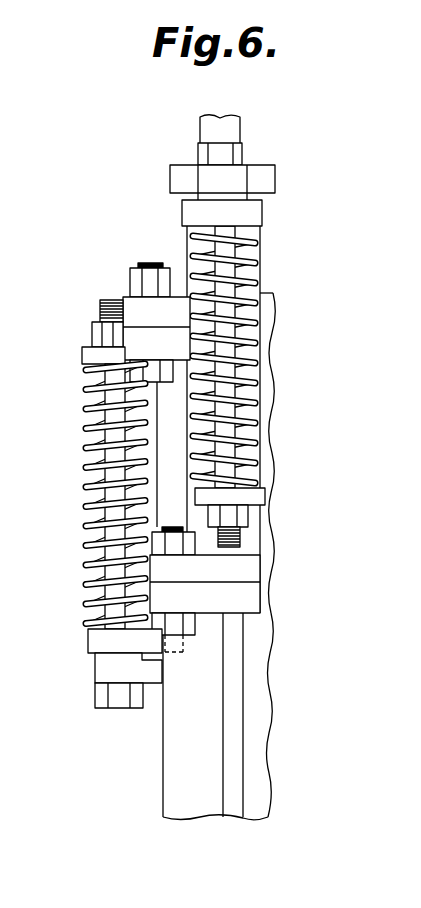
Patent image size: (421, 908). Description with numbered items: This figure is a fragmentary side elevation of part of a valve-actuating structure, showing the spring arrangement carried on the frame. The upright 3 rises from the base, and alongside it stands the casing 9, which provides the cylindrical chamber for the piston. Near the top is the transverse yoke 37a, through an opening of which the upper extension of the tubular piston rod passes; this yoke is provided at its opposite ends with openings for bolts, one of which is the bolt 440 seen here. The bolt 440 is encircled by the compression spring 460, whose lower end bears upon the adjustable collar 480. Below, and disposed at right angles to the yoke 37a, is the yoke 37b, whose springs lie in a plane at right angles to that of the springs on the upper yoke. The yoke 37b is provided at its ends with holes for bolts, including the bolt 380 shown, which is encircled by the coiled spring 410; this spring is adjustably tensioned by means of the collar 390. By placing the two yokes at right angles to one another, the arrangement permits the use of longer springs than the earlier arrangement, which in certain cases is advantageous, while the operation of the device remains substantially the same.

The transverse yoke 37a is at (233, 181).
The bolt 440 is at (252, 268).
The compression spring 460 is at (256, 430).
The adjustable collar 480 is at (258, 495).
The casing 9 is at (271, 385).
The upright 3 is at (258, 703).
The collar 390 is at (96, 355).
The coiled spring 410 is at (92, 470).
The bolt 380 is at (128, 557).
The yoke 37b is at (112, 668).